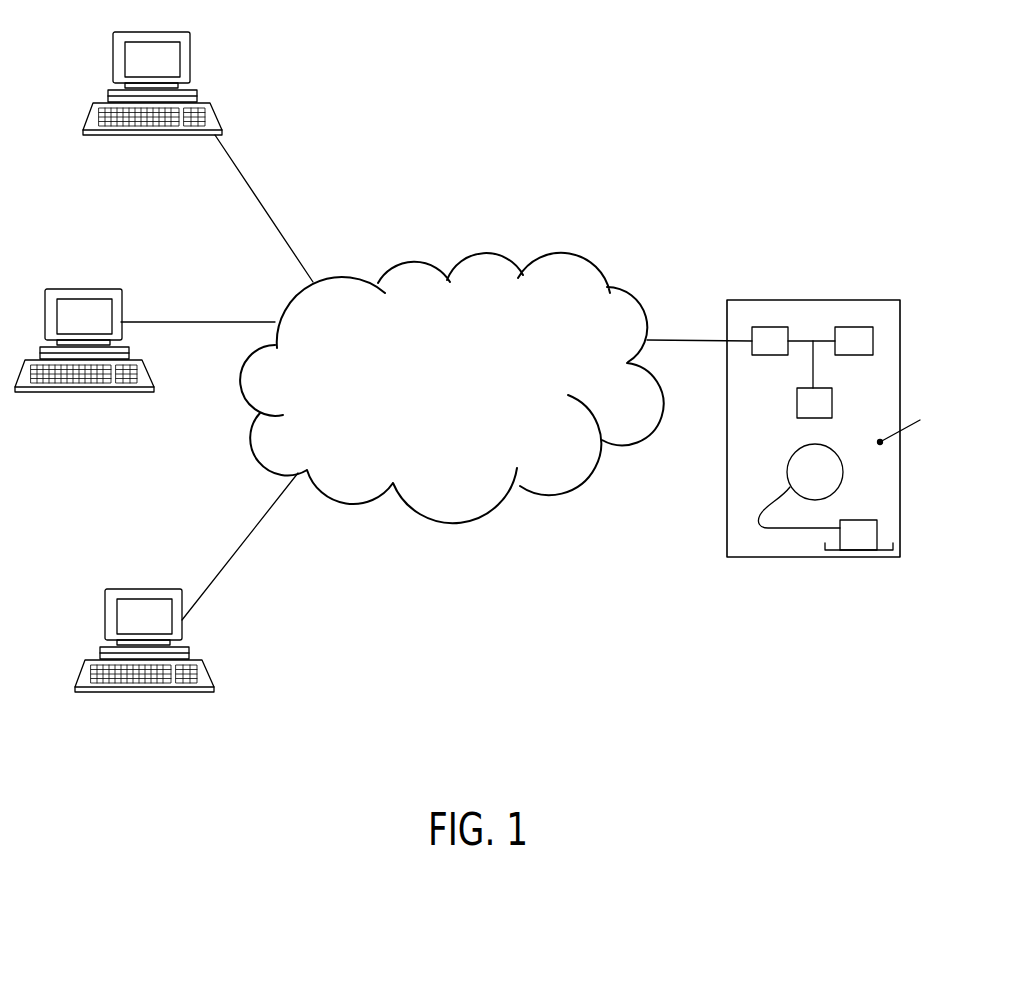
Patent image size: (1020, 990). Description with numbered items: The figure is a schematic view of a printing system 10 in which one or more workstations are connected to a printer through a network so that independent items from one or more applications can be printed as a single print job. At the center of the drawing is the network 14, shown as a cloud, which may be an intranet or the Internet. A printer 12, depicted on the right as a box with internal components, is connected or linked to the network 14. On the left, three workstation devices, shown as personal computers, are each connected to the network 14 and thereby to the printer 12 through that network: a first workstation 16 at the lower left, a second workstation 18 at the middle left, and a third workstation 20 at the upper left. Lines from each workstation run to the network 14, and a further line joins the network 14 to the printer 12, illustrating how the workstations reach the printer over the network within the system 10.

The printing system 10 is at (563, 617).
The printer 12 is at (793, 589).
The network 14 is at (467, 522).
The first workstation 16 is at (203, 665).
The second workstation 18 is at (121, 301).
The third workstation 20 is at (192, 53).